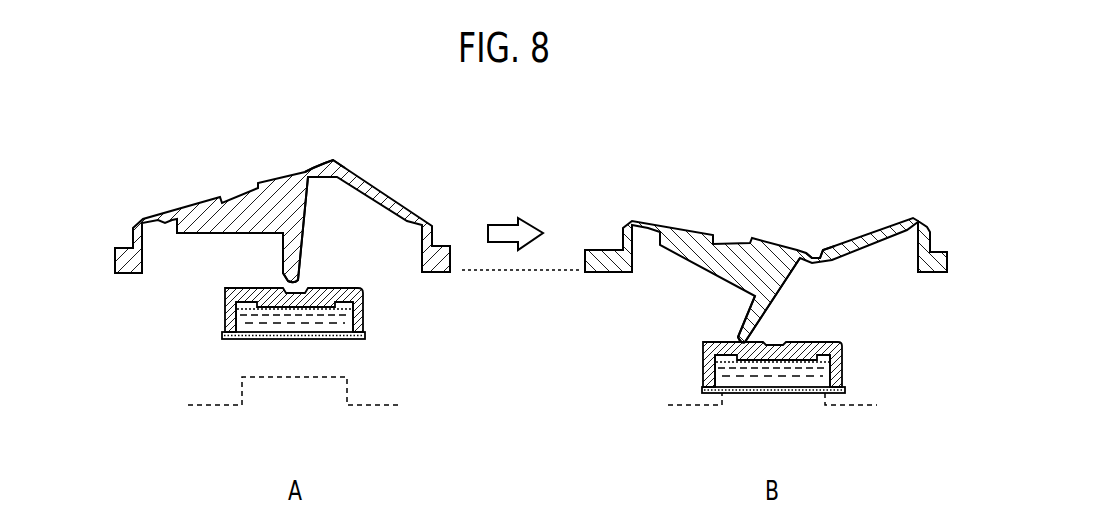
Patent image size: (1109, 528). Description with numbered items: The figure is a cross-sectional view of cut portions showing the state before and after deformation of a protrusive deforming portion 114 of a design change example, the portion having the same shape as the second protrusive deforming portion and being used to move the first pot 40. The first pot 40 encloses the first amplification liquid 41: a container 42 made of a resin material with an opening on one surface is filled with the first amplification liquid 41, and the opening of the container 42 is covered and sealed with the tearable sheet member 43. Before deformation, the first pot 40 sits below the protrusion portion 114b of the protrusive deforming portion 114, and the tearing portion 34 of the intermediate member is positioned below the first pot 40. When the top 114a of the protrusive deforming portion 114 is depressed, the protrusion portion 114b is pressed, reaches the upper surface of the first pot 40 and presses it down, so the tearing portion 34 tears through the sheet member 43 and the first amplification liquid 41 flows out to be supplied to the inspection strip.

The protrusive deforming portion 114 is at (288, 176).
The top of the protrusive deforming portion 114a is at (336, 160).
The protrusion portion 114b is at (300, 263).
The first pot 40 is at (219, 298).
The first amplification liquid 41 is at (250, 318).
The container 42 is at (347, 320).
The tearable sheet member 43 is at (343, 338).
The tearing portion 34 is at (290, 378).